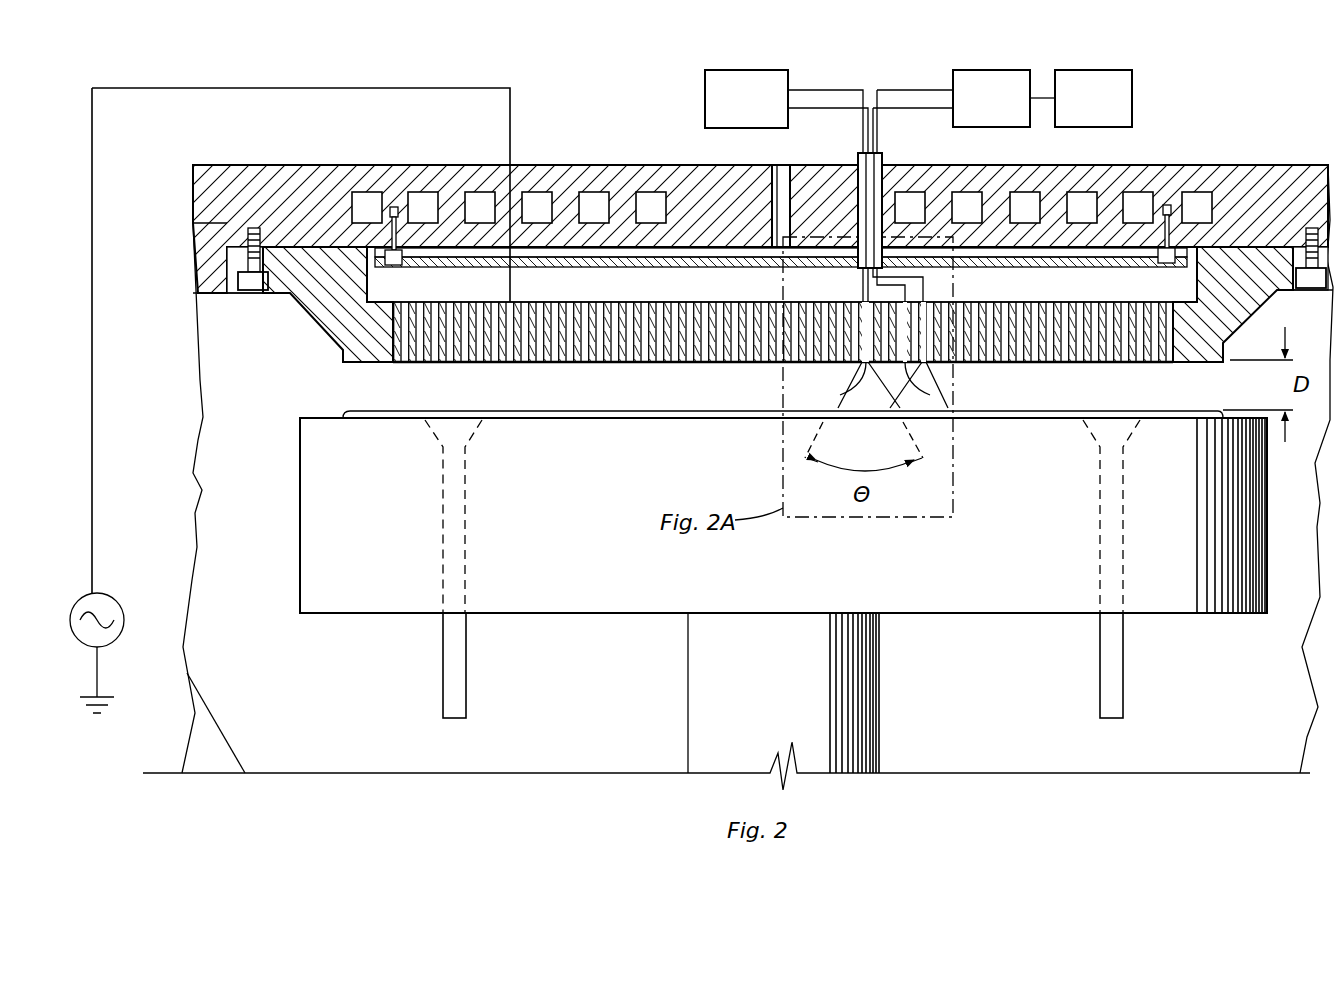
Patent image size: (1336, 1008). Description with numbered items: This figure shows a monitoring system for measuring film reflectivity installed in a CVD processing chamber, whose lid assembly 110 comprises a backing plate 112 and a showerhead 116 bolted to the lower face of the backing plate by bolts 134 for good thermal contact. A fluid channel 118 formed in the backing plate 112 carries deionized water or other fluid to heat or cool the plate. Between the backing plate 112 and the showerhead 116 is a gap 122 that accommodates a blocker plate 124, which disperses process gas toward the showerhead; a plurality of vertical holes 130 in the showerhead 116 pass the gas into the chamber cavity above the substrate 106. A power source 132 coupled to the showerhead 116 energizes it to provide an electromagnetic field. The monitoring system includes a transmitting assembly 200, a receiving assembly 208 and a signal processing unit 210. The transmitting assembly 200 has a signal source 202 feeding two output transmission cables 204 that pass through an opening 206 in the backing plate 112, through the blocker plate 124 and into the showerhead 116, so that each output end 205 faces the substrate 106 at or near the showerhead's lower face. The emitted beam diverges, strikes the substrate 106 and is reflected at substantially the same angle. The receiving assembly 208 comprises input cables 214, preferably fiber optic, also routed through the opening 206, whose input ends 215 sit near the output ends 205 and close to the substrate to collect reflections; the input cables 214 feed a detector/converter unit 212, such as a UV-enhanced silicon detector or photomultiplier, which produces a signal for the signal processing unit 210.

The substrate 106 is at (356, 412).
The lid assembly 110 is at (1207, 113).
The backing plate 112 is at (312, 165).
The showerhead 116 is at (328, 338).
The fluid channel 118 is at (366, 172).
The gap 122 is at (713, 277).
The blocker plate 124 is at (569, 262).
The holes 130 is at (602, 358).
The power source 132 is at (115, 600).
The bolts 134 is at (253, 165).
The transmitting assembly 200 is at (620, 48).
The signal source 202 is at (755, 68).
The output transmission cables 204 is at (841, 107).
The output end 205 is at (866, 378).
The opening 206 is at (872, 152).
The receiving assembly 208 is at (1045, 135).
The signal processing unit 210 is at (1082, 70).
The detector/converter unit 212 is at (985, 70).
The input cables 214 is at (902, 107).
The input ends 215 is at (866, 362).